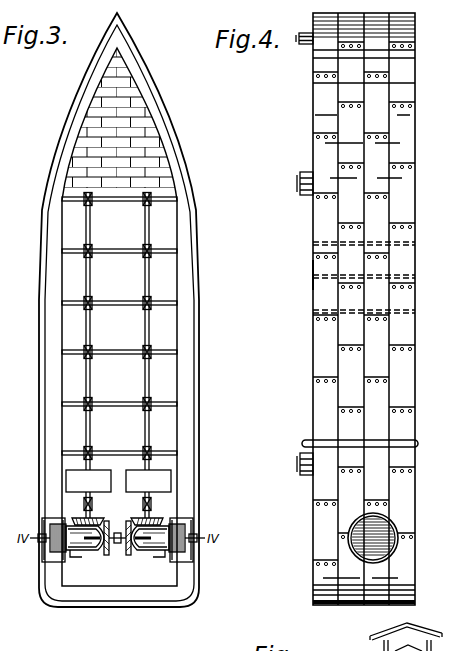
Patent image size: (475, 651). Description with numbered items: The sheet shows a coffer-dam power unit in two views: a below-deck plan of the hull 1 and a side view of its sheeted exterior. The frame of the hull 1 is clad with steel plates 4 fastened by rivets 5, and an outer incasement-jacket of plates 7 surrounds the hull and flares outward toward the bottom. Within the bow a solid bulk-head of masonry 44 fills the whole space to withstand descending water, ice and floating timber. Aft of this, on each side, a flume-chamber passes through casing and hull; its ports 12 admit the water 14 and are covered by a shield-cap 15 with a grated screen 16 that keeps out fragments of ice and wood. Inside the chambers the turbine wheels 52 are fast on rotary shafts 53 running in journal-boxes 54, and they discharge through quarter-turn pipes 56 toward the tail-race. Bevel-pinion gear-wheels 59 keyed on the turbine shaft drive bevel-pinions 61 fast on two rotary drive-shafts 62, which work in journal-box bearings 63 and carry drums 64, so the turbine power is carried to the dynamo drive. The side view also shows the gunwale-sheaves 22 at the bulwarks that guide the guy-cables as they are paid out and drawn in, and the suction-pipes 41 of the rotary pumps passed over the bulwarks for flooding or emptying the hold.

In FIG. 3, the hull 1 is at (119, 317).
In FIG. 4, the steel plates 4 is at (364, 309).
In FIG. 4, the rivets 5 is at (364, 304).
In FIG. 3, the incasement-jacket plates 7 is at (118, 310).
In FIG. 4, the incasement-jacket plates 7 is at (304, 274).
In FIG. 3, the ports 12 is at (192, 519).
In FIG. 4, the water 14 is at (303, 29).
In FIG. 3, the shield-cap 15 is at (185, 526).
In FIG. 4, the grated screen 16 is at (373, 538).
In FIG. 4, the gunwale-sheaves 22 is at (296, 318).
In FIG. 4, the suction-pipes 41 is at (419, 444).
In FIG. 3, the bulk-head of masonry 44 is at (119, 118).
In FIG. 3, the turbine wheels 52 is at (160, 557).
In FIG. 3, the rotary shafts 53 is at (118, 544).
In FIG. 3, the journal-boxes 54 is at (191, 545).
In FIG. 3, the quarter-turn pipes 56 is at (117, 538).
In FIG. 3, the bevel-pinion gear-wheels 59 is at (109, 555).
In FIG. 3, the bevel-pinions 61 is at (121, 516).
In FIG. 3, the rotary drive-shafts 62 is at (118, 385).
In FIG. 3, the journal-box bearings 63 is at (124, 303).
In FIG. 3, the drums 64 is at (152, 503).